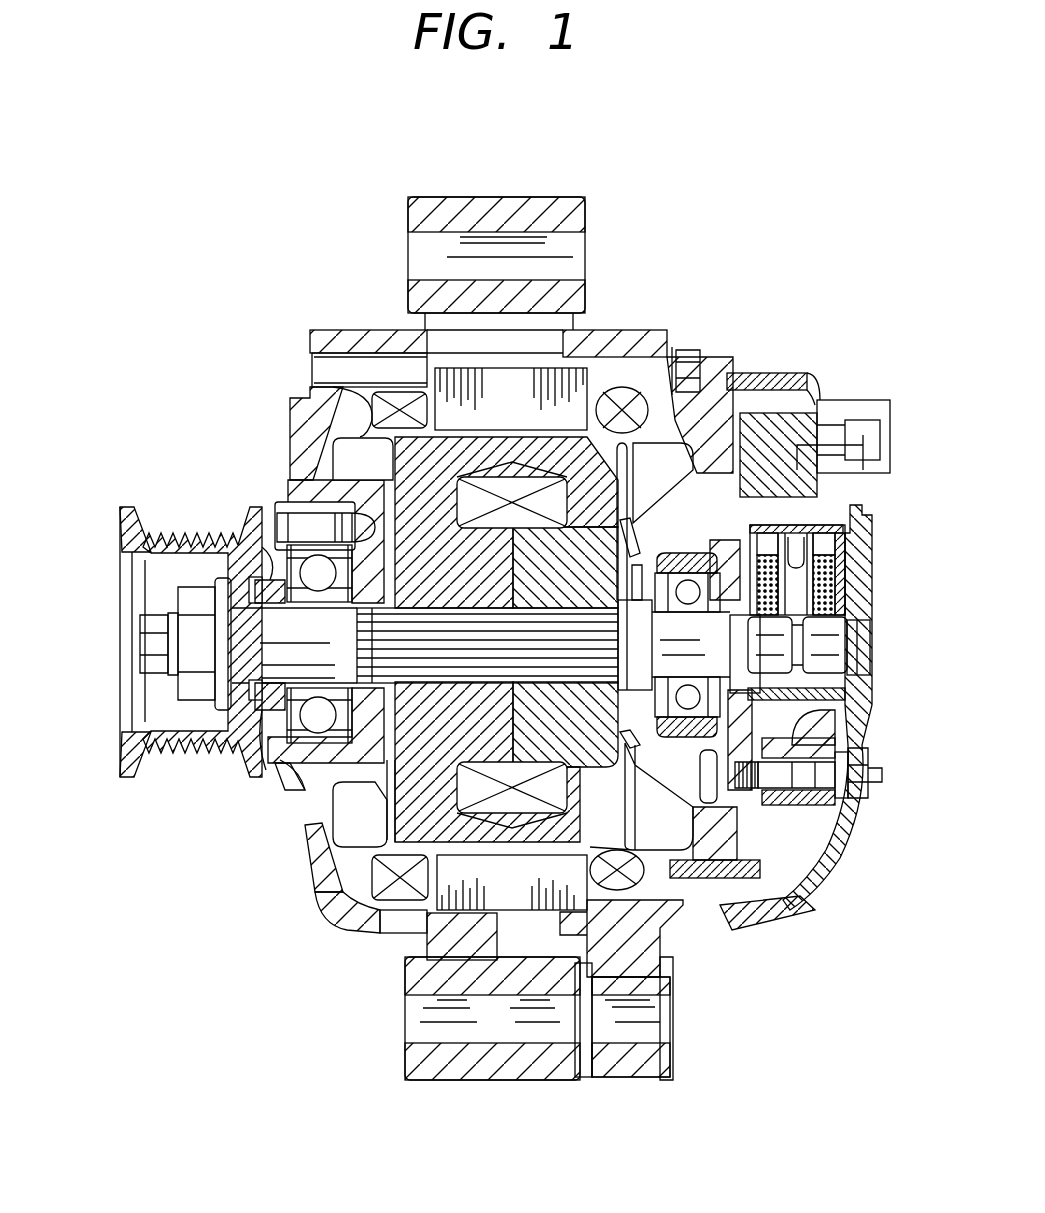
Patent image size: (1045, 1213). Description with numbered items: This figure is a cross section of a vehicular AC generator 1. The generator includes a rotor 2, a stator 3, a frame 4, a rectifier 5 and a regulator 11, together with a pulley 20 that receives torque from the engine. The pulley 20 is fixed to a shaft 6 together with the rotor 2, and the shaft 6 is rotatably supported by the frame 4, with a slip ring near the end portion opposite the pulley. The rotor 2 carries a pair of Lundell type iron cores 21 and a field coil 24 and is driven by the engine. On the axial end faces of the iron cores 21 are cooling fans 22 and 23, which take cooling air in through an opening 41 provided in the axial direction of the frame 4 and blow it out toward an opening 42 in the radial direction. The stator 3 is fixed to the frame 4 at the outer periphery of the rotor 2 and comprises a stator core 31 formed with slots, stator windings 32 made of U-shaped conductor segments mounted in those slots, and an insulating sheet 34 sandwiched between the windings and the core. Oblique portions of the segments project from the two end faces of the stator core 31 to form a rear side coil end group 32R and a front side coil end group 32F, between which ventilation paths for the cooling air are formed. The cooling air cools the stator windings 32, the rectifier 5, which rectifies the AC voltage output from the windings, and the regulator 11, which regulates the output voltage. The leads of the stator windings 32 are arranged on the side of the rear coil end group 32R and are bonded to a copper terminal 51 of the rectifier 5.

The vehicular AC generator 1 is at (705, 150).
The rotor 2 is at (360, 424).
The stator 3 is at (648, 355).
The stator core 31 is at (510, 405).
The stator windings 32 is at (541, 581).
The front side coil end group 32F is at (420, 400).
The rear side coil end group 32R is at (640, 405).
The insulating sheet 34 is at (395, 397).
The frame 4 is at (303, 457).
The opening 41 is at (363, 828).
The opening 42 is at (380, 923).
The rectifier 5 is at (860, 838).
The copper terminal 51 is at (807, 907).
The shaft 6 is at (268, 658).
The regulator 11 is at (823, 427).
The pulley 20 is at (120, 738).
The Lundell type iron cores 21 is at (390, 850).
The cooling fan 22 is at (330, 840).
The cooling fan 23 is at (662, 823).
The field coil 24 is at (420, 915).